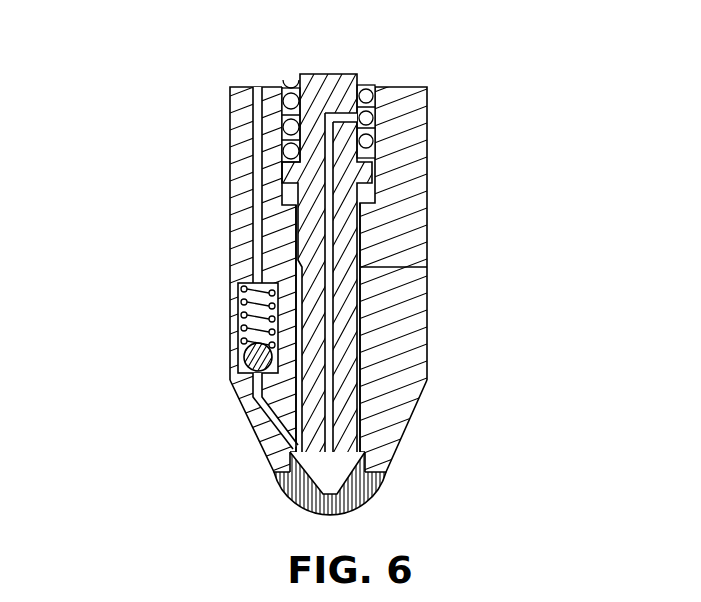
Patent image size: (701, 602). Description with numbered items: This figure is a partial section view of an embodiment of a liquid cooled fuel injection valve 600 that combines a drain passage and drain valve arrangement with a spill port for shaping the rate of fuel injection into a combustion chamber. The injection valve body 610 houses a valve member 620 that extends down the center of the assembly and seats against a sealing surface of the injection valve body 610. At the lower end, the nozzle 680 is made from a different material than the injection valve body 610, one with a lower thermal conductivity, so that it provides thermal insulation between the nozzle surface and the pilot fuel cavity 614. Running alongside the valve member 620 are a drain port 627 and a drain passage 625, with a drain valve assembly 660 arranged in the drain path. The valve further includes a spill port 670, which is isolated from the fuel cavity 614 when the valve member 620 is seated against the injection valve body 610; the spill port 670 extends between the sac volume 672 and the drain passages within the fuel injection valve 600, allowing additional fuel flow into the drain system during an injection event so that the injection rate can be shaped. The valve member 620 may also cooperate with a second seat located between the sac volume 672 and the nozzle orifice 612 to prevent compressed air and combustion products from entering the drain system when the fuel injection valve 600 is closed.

The liquid cooled fuel injection valve 600 is at (200, 98).
The injection valve body 610 is at (398, 363).
The nozzle orifice 612 is at (385, 458).
The pilot fuel cavity 614 is at (360, 413).
The valve member 620 is at (340, 313).
The drain passage 625 is at (255, 402).
The drain port 627 is at (257, 213).
The drain valve assembly 660 is at (200, 312).
The spill port 670 is at (327, 225).
The sac volume 672 is at (383, 487).
The nozzle 680 is at (330, 497).